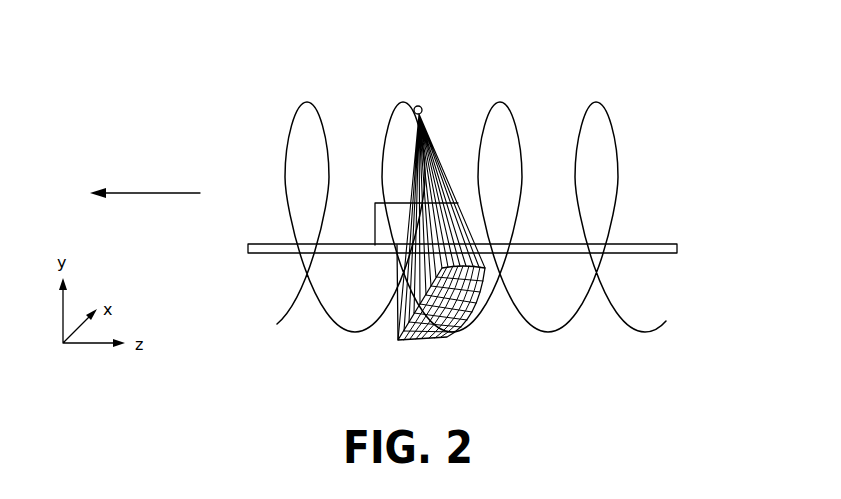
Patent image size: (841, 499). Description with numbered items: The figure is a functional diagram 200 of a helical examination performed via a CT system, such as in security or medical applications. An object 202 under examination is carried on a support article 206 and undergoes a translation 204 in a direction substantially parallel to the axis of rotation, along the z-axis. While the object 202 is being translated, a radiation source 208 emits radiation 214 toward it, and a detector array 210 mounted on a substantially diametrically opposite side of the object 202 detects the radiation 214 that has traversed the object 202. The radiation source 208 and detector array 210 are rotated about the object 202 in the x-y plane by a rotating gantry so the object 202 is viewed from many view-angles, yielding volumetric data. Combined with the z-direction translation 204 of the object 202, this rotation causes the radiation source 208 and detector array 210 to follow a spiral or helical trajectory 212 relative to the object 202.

The functional diagram 200 is at (146, 54).
The object 202 is at (375, 203).
The translation 204 is at (145, 194).
The support article 206 is at (672, 243).
The radiation source 208 is at (421, 106).
The detector array 210 is at (420, 342).
The helical trajectory 212 is at (590, 100).
The radiation 214 is at (436, 154).